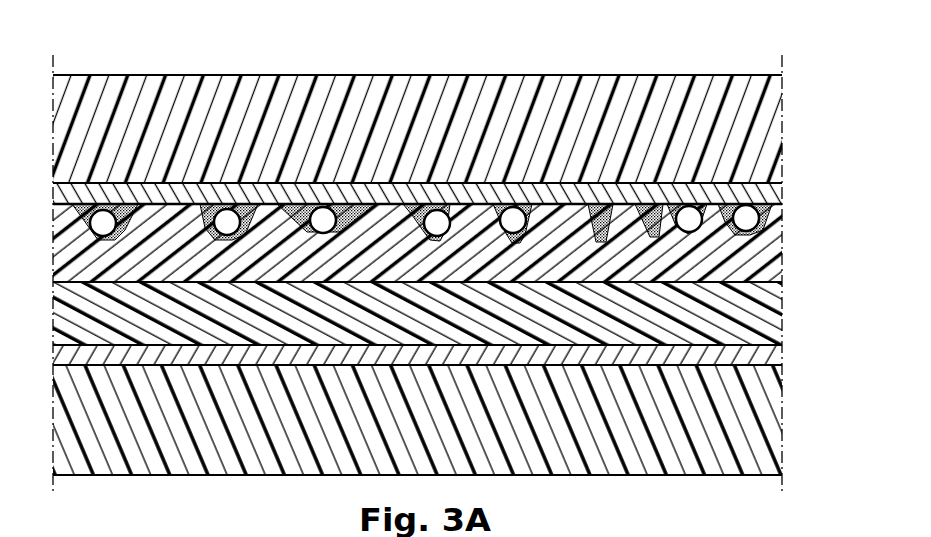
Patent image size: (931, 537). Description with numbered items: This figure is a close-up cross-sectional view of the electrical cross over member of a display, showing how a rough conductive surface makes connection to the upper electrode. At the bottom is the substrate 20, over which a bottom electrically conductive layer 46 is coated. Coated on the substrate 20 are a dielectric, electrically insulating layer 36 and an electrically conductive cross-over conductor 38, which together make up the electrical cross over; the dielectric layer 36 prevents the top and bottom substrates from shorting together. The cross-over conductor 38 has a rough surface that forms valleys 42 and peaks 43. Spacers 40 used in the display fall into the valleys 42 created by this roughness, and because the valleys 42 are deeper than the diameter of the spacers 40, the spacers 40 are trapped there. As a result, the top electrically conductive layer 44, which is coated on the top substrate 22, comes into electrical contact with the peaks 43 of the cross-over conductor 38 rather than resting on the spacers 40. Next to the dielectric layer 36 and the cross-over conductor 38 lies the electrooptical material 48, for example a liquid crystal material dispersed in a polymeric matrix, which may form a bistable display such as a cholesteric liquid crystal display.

The substrate 20 is at (223, 462).
The top substrate 22 is at (412, 90).
The dielectric layer 36 is at (737, 315).
The cross-over conductor 38 is at (756, 248).
The spacers 40 is at (227, 222).
The valleys 42 is at (265, 233).
The peaks 43 is at (175, 200).
The top electrically conductive layer 44 is at (638, 215).
The bottom electrically conductive layer 46 is at (753, 353).
The electrooptical material 48 is at (602, 215).